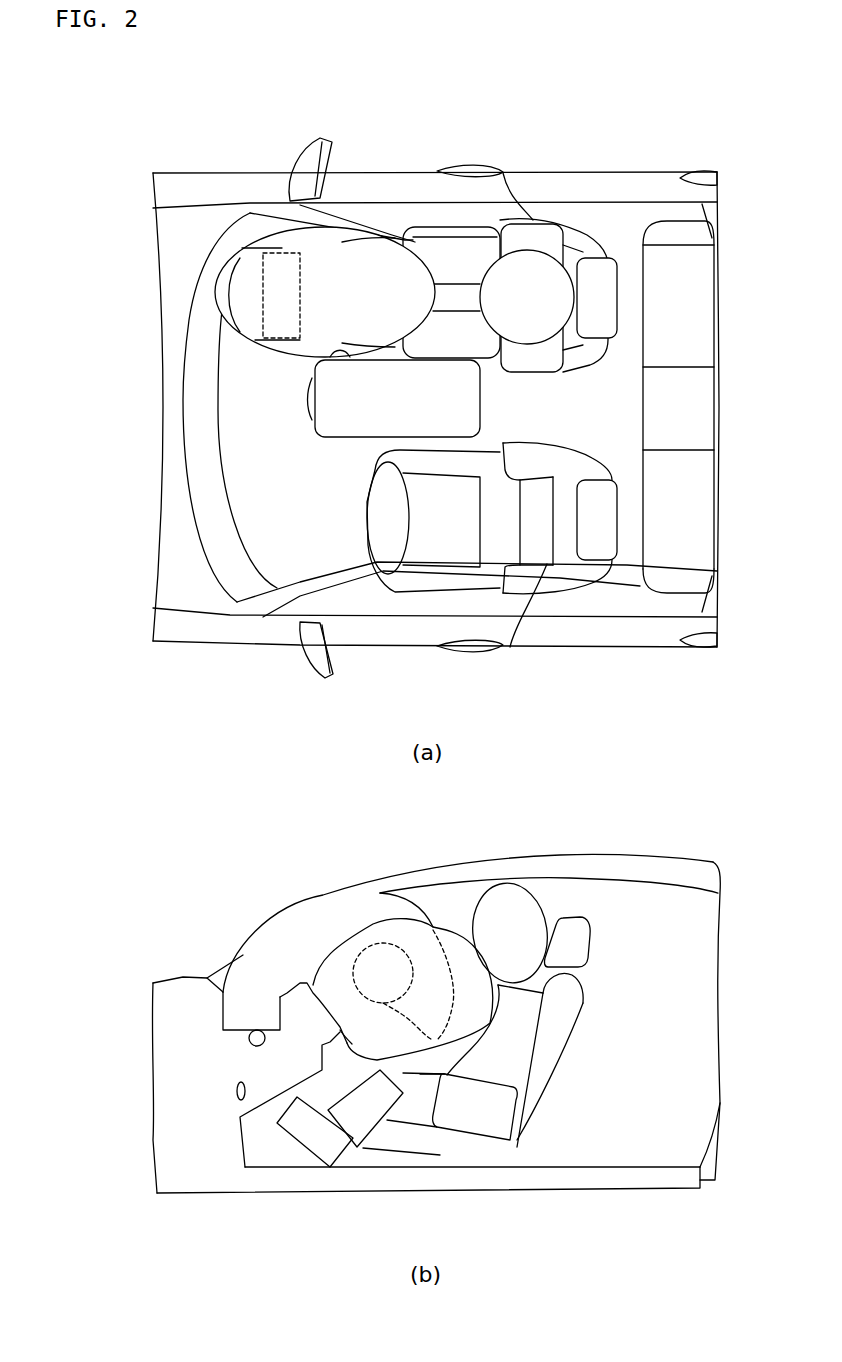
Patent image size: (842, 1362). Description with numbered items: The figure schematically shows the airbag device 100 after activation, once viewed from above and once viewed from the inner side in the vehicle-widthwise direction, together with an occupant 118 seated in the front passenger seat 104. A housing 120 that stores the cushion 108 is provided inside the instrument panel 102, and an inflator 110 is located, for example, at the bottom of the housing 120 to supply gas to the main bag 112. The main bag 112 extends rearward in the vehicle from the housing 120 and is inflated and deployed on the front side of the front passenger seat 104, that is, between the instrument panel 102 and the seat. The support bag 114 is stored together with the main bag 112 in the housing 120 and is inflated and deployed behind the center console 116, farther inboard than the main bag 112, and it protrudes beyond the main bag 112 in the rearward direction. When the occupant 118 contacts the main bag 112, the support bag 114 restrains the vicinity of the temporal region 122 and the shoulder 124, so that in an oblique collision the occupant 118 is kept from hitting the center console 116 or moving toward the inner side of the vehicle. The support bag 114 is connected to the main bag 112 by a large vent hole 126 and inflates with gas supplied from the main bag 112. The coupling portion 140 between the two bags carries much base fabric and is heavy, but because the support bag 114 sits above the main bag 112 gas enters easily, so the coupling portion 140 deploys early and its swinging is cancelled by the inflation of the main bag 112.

The airbag device 100 is at (258, 208).
The instrument panel 102 is at (275, 370).
The front passenger seat 104 is at (593, 270).
The cushion 108 is at (230, 302).
The inflator 110 is at (257, 1047).
The main bag 112 is at (367, 253).
The support bag 114 is at (357, 437).
The center console 116 is at (305, 398).
The occupant 118 is at (425, 647).
The housing 120 is at (262, 290).
The temporal region 122 is at (527, 907).
The shoulder 124 is at (523, 997).
The vent hole 126 is at (447, 1038).
The coupling portion 140 is at (340, 357).